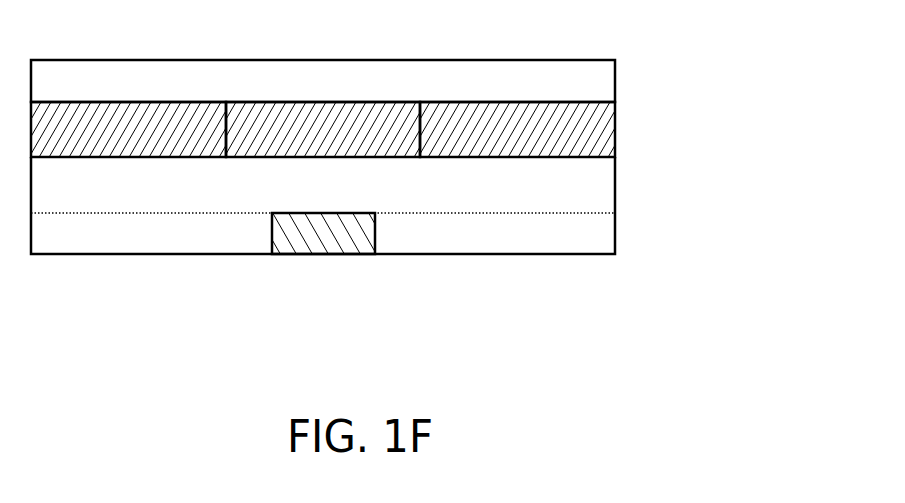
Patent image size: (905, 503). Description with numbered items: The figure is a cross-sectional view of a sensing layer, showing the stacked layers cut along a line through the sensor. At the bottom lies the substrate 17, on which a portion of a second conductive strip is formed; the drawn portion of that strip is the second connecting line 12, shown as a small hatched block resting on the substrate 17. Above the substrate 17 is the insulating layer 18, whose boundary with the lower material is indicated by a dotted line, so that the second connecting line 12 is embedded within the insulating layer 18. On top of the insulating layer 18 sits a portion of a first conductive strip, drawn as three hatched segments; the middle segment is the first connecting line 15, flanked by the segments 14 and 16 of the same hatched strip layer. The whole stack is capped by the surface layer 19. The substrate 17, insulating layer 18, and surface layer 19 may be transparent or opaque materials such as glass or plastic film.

The second connecting line 12 is at (315, 235).
The first hatched layer portion 14 is at (128, 120).
The first connecting line 15 is at (322, 122).
The third hatched layer portion 16 is at (497, 120).
The substrate 17 is at (580, 240).
The insulating layer 18 is at (595, 185).
The surface layer 19 is at (595, 88).